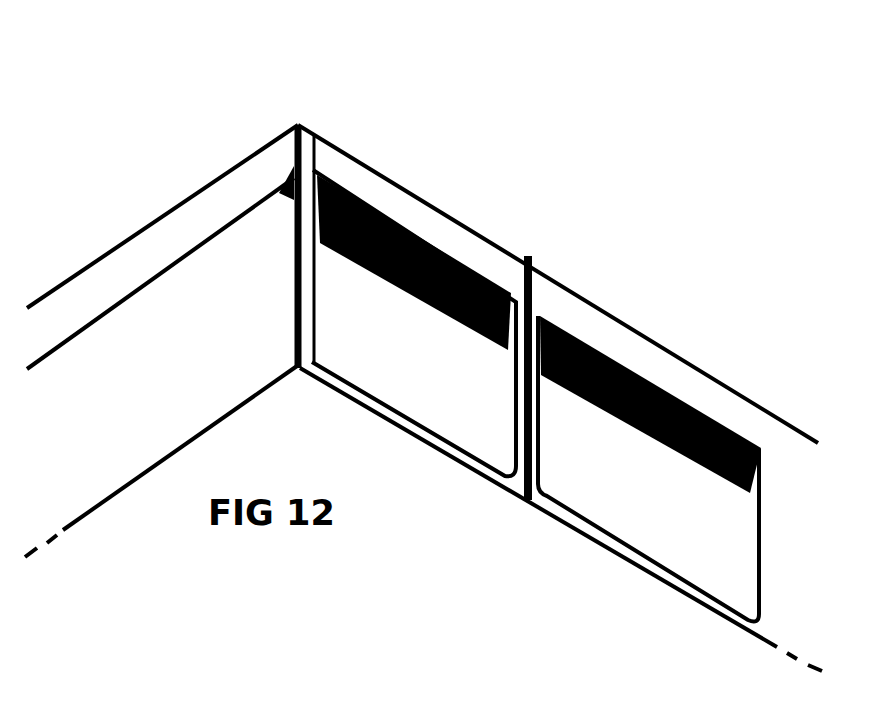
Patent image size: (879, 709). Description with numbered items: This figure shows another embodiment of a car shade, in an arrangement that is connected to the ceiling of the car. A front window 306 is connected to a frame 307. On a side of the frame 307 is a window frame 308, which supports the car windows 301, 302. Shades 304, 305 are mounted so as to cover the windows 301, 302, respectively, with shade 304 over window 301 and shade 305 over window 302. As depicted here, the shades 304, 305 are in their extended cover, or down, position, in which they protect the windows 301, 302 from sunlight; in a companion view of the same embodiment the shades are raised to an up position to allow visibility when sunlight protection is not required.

The car window 301 is at (422, 388).
The car window 302 is at (643, 493).
The shade 304 is at (440, 248).
The shade 305 is at (652, 377).
The front window 306 is at (153, 320).
The frame 307 is at (237, 187).
The window frame 308 is at (328, 138).